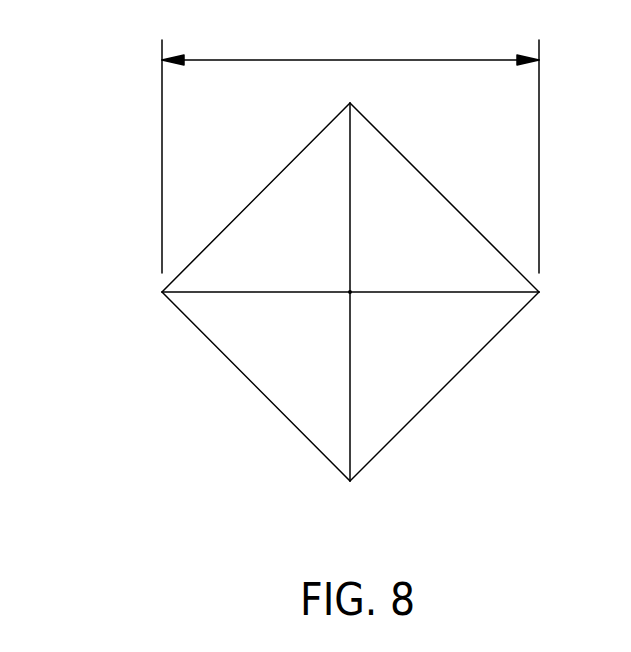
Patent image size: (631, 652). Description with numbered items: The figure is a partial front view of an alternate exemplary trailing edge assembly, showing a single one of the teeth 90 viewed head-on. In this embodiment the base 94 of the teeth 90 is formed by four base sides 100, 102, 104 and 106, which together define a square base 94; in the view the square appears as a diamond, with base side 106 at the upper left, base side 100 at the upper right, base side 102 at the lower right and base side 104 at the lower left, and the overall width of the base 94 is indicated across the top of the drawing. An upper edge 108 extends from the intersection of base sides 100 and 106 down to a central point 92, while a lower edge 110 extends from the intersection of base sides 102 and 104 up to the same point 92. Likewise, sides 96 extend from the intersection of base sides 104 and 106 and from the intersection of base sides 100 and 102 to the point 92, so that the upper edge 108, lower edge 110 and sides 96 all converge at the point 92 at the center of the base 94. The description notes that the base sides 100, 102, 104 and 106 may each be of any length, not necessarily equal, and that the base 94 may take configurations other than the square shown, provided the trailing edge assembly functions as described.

The teeth 90 is at (122, 120).
The point 92 is at (350, 292).
The base 94 is at (350, 148).
The sides 96 is at (280, 292).
The base side 100 is at (437, 188).
The base side 102 is at (447, 387).
The base side 104 is at (253, 387).
The base side 106 is at (267, 187).
The upper edge 108 is at (350, 238).
The lower edge 110 is at (350, 336).